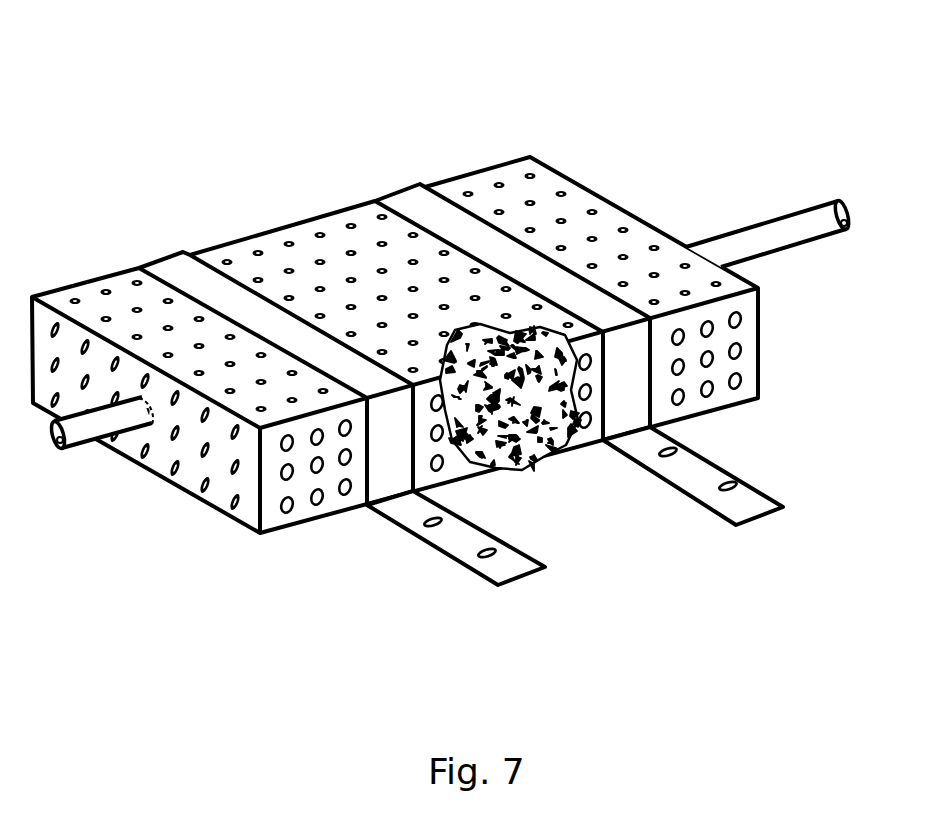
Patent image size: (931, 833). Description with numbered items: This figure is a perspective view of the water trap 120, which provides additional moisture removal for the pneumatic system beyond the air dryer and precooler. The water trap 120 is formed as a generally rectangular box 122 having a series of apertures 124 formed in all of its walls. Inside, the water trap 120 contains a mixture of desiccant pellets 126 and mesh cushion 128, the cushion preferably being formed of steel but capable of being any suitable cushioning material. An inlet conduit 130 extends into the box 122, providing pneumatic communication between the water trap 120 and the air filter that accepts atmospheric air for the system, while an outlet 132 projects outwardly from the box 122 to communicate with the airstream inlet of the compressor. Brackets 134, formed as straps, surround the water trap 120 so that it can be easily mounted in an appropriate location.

The water trap 120 is at (293, 190).
The rectangular box 122 is at (513, 175).
The apertures 124 is at (319, 262).
The desiccant pellets 126 is at (503, 455).
The mesh cushion 128 is at (540, 442).
The inlet conduit 130 is at (60, 446).
The outlet 132 is at (773, 233).
The brackets 134 is at (390, 466).